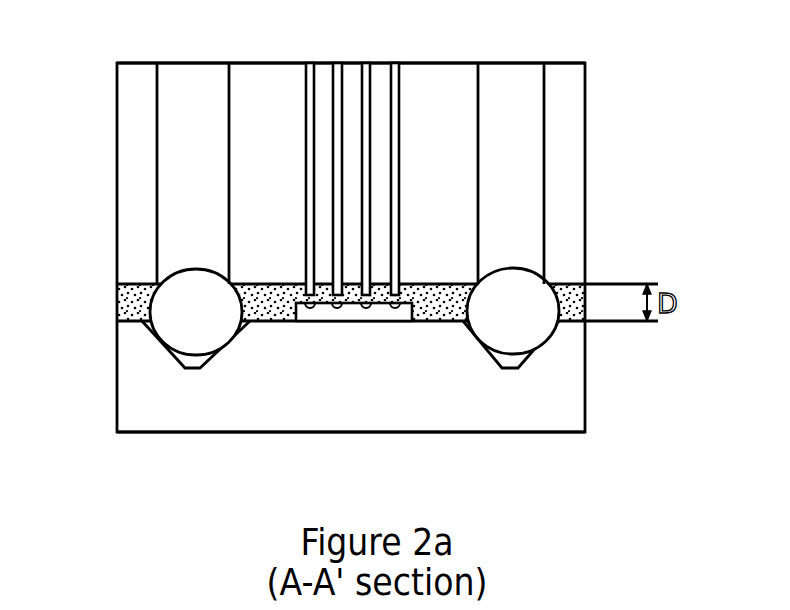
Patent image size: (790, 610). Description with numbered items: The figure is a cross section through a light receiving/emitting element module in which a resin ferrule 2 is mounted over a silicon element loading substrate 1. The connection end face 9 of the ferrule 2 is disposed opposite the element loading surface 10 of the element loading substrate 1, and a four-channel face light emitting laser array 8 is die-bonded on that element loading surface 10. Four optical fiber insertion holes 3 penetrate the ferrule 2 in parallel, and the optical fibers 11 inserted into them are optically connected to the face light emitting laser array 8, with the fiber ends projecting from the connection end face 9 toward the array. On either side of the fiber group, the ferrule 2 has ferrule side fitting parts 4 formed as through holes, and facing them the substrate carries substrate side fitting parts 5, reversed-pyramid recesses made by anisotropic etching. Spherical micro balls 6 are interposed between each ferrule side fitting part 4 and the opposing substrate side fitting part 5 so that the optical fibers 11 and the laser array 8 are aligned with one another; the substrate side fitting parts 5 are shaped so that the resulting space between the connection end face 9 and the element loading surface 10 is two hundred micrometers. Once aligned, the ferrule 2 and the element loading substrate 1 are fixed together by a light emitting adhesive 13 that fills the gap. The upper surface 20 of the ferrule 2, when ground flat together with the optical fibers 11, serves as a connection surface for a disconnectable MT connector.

The element loading substrate 1 is at (532, 412).
The ferrule 2 is at (573, 130).
The optical fiber insertion holes 3 is at (305, 151).
The ferrule side fitting parts 4 is at (178, 193).
The substrate side fitting parts 5 is at (182, 363).
The micro balls 6 is at (178, 337).
The face light emitting laser array 8 is at (310, 312).
The connection end face 9 is at (117, 292).
The element loading surface 10 is at (118, 312).
The optical fibers 11 is at (401, 110).
The light emitting adhesive 13 is at (125, 295).
The upper surface 20 is at (517, 62).